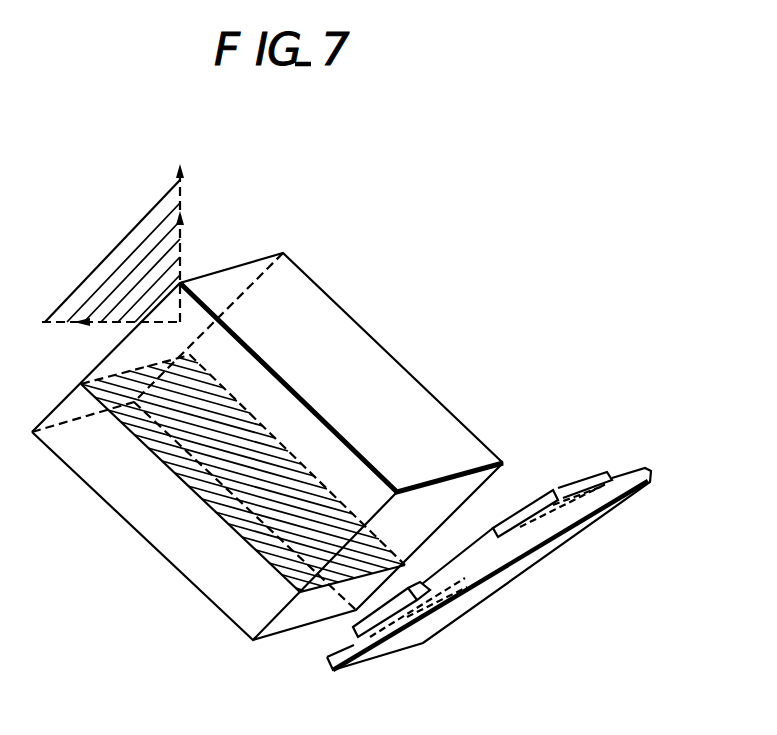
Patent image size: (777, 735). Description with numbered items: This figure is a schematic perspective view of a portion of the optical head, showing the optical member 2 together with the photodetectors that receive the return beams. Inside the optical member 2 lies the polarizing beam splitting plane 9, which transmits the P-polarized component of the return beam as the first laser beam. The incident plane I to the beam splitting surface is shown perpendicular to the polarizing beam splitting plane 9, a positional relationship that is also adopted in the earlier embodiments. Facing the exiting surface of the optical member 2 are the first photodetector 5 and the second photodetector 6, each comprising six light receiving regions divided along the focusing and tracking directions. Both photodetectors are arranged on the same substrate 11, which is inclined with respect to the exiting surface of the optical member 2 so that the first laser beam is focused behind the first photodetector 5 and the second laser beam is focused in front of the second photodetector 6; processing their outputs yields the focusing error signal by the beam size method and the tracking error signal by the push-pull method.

The incident plane I is at (117, 244).
The optical member 2 is at (397, 334).
The polarizing beam splitting plane 9 is at (177, 438).
The first photodetector 5 is at (352, 629).
The second photodetector 6 is at (530, 491).
The substrate 11 is at (512, 568).